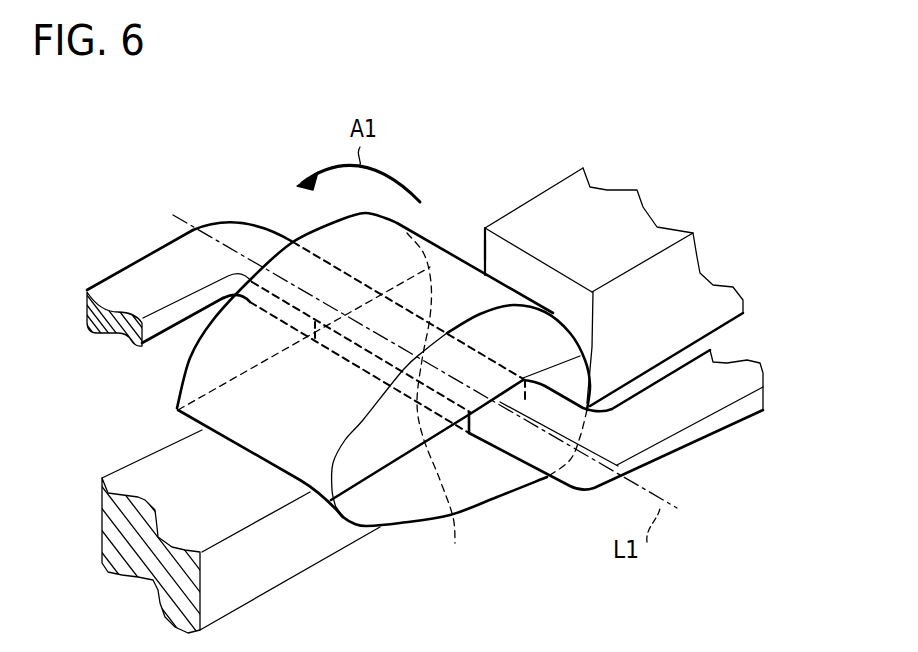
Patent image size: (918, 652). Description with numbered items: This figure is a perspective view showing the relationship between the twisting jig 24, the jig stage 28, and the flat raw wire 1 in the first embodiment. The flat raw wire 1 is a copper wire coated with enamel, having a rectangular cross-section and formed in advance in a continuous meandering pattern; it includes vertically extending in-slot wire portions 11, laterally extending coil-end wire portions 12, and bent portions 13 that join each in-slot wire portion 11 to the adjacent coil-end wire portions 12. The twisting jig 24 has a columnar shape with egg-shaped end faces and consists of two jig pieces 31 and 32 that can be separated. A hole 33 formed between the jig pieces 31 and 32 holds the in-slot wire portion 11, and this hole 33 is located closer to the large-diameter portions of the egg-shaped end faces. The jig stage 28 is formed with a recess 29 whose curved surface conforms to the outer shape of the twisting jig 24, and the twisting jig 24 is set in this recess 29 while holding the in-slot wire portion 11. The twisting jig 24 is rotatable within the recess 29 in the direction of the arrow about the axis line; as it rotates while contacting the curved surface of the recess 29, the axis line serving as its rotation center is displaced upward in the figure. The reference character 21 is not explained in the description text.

The flat raw wire 1 is at (262, 222).
The in-slot wire portion 11 is at (438, 401).
The coil-end wire portion 12 is at (123, 280).
The bent portion 13 is at (237, 226).
The bending die 21 is at (416, 147).
The twisting jig 24 is at (178, 378).
The jig stage 28 is at (537, 195).
The recess 29 is at (488, 250).
The jig piece 31 is at (348, 522).
The jig piece 32 is at (389, 508).
The hole 33 is at (494, 405).